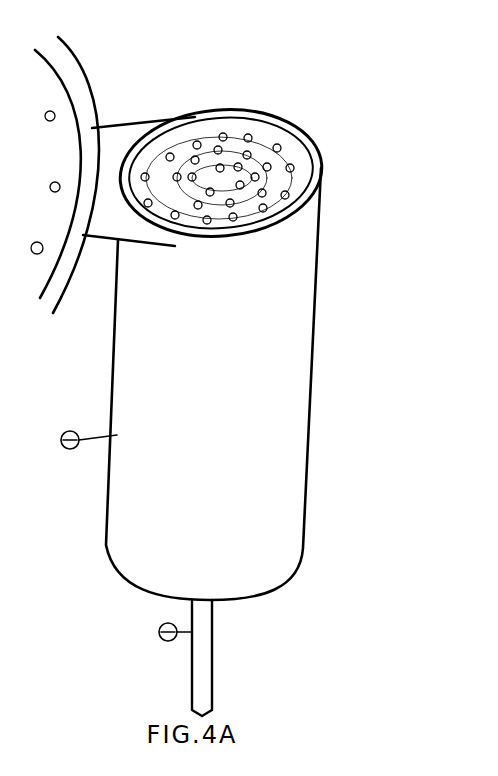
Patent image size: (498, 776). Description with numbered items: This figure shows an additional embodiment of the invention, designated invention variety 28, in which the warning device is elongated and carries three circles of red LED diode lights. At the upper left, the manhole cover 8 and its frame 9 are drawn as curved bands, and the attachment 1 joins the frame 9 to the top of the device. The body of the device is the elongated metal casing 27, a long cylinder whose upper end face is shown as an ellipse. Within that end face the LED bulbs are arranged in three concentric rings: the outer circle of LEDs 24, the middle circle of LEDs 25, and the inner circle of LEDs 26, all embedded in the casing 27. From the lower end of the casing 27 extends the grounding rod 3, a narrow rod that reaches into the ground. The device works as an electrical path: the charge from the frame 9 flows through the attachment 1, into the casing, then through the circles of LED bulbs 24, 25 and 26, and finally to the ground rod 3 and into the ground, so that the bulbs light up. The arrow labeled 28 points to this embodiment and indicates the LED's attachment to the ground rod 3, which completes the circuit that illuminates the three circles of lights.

The attachment 1 is at (115, 143).
The grounding rod 3 is at (207, 670).
The manhole cover 8 is at (32, 68).
The frame 9 is at (77, 85).
The outer circle of LEDs 24 is at (225, 132).
The middle circle of LEDs 25 is at (247, 155).
The inner circle of LEDs 26 is at (263, 175).
The metal casing 27 is at (135, 362).
The invention variety / LED's attachment to the ground rod 28 is at (330, 347).